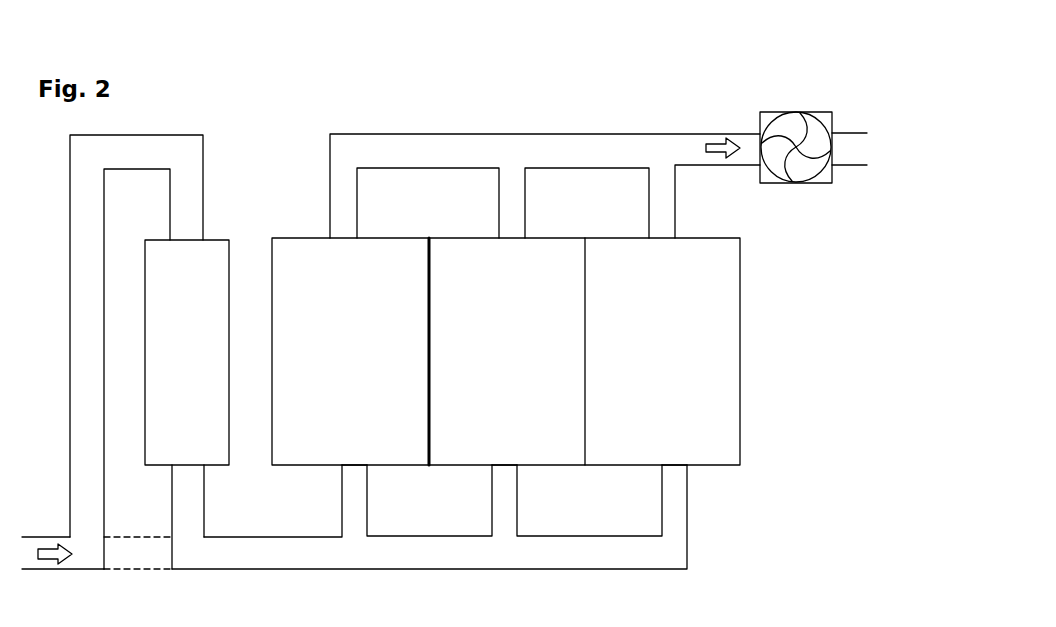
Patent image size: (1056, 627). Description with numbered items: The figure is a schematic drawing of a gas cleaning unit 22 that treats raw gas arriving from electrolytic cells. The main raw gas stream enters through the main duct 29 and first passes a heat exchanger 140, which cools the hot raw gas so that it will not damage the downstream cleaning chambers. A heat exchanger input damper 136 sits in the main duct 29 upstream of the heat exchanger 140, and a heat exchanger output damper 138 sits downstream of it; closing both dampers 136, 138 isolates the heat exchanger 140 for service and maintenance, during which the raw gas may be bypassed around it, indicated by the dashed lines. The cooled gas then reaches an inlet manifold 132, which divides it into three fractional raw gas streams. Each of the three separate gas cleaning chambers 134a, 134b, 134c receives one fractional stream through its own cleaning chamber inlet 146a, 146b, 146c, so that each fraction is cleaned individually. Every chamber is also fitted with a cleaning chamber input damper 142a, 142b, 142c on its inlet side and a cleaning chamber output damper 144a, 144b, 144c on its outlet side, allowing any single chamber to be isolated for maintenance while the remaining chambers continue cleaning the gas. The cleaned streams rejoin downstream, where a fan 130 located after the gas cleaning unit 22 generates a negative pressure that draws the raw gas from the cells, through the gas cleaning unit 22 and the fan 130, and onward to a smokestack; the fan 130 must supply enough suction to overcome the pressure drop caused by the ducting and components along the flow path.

The gas cleaning unit 22 is at (693, 87).
The main duct 29 is at (83, 571).
The fan 130 is at (796, 184).
The inlet manifold 132 is at (372, 571).
The gas cleaning chamber 134a is at (350, 351).
The gas cleaning chamber 134b is at (507, 351).
The gas cleaning chamber 134c is at (662, 351).
The heat exchanger input damper 136 is at (183, 212).
The heat exchanger output damper 138 is at (192, 475).
The heat exchanger 140 is at (187, 352).
The cleaning chamber input damper 142a is at (359, 480).
The cleaning chamber input damper 142b is at (513, 478).
The cleaning chamber input damper 142c is at (678, 478).
The cleaning chamber output damper 144a is at (345, 206).
The cleaning chamber output damper 144b is at (513, 205).
The cleaning chamber output damper 144c is at (665, 203).
The cleaning chamber inlet 146a is at (356, 463).
The cleaning chamber inlet 146b is at (503, 463).
The cleaning chamber inlet 146c is at (672, 463).